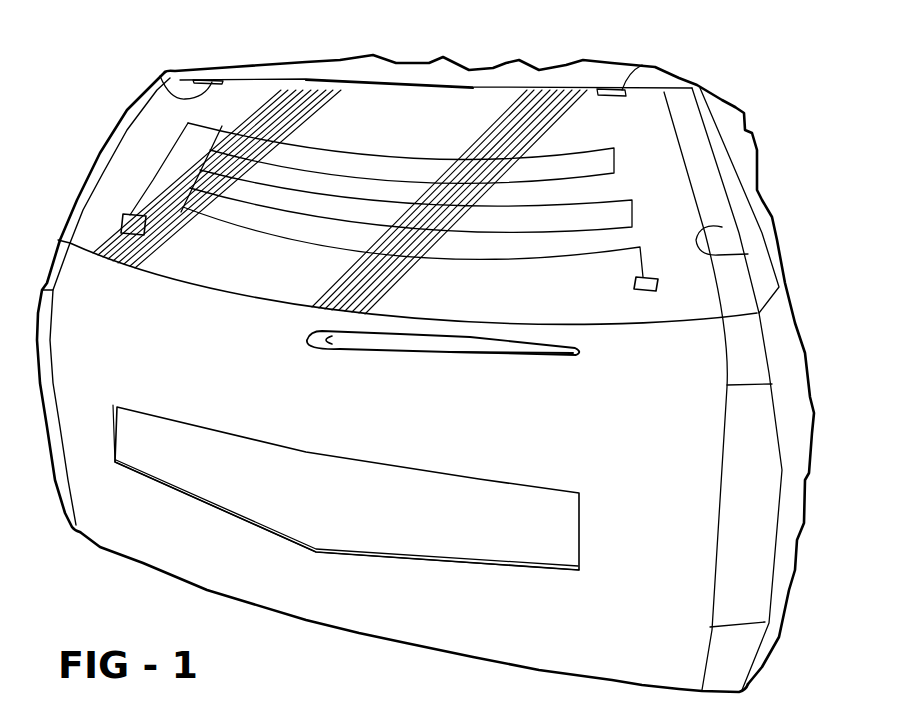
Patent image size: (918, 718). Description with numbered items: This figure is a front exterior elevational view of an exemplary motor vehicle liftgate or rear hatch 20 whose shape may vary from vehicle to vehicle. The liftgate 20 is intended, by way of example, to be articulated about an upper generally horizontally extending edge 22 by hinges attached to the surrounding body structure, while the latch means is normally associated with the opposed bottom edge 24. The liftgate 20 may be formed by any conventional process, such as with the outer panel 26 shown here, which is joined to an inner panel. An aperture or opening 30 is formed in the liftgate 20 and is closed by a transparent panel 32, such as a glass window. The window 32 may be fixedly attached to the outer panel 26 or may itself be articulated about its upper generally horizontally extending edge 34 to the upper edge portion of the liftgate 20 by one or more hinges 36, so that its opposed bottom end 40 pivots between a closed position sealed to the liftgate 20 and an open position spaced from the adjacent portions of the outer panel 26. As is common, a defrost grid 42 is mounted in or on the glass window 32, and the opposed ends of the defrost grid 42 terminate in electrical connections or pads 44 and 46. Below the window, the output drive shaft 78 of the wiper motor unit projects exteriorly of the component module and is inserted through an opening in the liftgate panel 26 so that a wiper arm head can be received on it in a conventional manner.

The liftgate 20 is at (768, 201).
The upper edge 22 is at (680, 80).
The bottom edge 24 is at (356, 634).
The outer panel 26 is at (672, 430).
The aperture 30 is at (748, 254).
The transparent panel 32 is at (665, 155).
The upper edge of window 34 is at (369, 80).
The hinges 36 is at (160, 76).
The bottom end of window 40 is at (220, 285).
The defrost grid 42 is at (158, 177).
The electrical connection pad 44 is at (124, 216).
The electrical connection pad 46 is at (642, 291).
The output drive shaft 78 is at (408, 352).